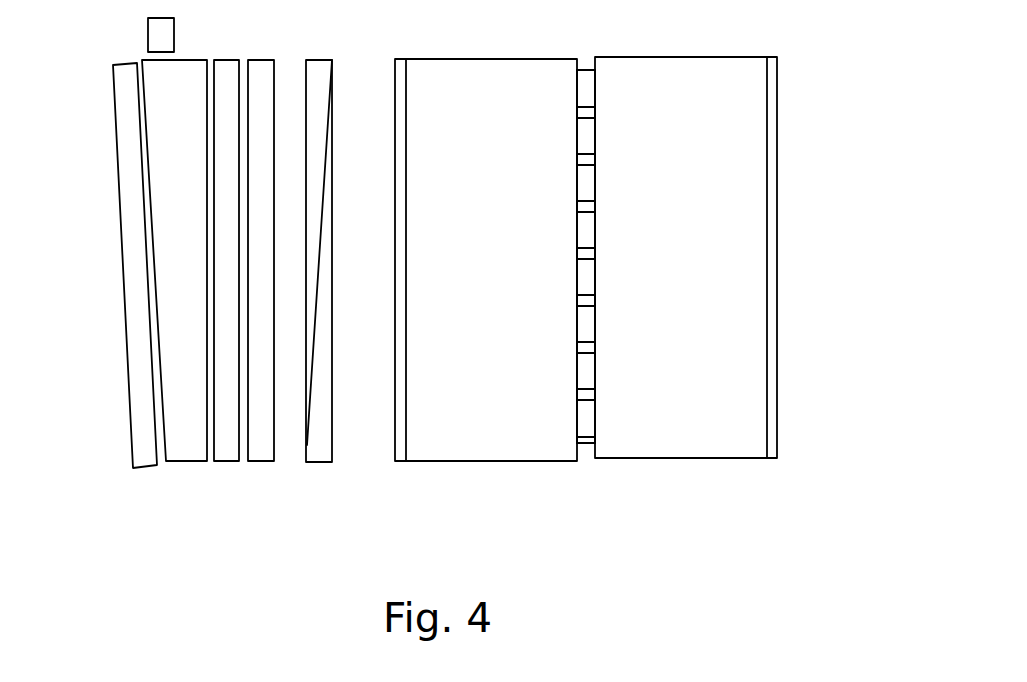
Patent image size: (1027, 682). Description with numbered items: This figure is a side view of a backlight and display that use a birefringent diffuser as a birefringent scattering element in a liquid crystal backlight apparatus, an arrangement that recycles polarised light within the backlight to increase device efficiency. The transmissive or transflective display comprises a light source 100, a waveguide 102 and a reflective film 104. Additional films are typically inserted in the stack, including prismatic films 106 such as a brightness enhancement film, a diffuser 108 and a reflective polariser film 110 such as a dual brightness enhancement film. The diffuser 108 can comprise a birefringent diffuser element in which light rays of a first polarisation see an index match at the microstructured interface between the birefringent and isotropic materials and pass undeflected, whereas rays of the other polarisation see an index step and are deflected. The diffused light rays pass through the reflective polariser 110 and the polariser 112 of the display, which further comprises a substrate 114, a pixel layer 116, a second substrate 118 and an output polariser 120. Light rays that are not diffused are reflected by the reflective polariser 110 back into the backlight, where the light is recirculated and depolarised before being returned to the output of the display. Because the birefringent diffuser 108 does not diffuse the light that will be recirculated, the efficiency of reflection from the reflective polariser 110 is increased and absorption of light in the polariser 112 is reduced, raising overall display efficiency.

The light source 100 is at (148, 31).
The waveguide 102 is at (187, 461).
The reflective film 104 is at (142, 469).
The prismatic films 106 is at (227, 461).
The diffusers 108 is at (260, 461).
The reflective polariser films 110 is at (318, 462).
The polariser 112 is at (402, 461).
The substrate 114 is at (487, 461).
The pixel layer 116 is at (588, 70).
The substrate 118 is at (698, 458).
The output polariser 120 is at (777, 158).